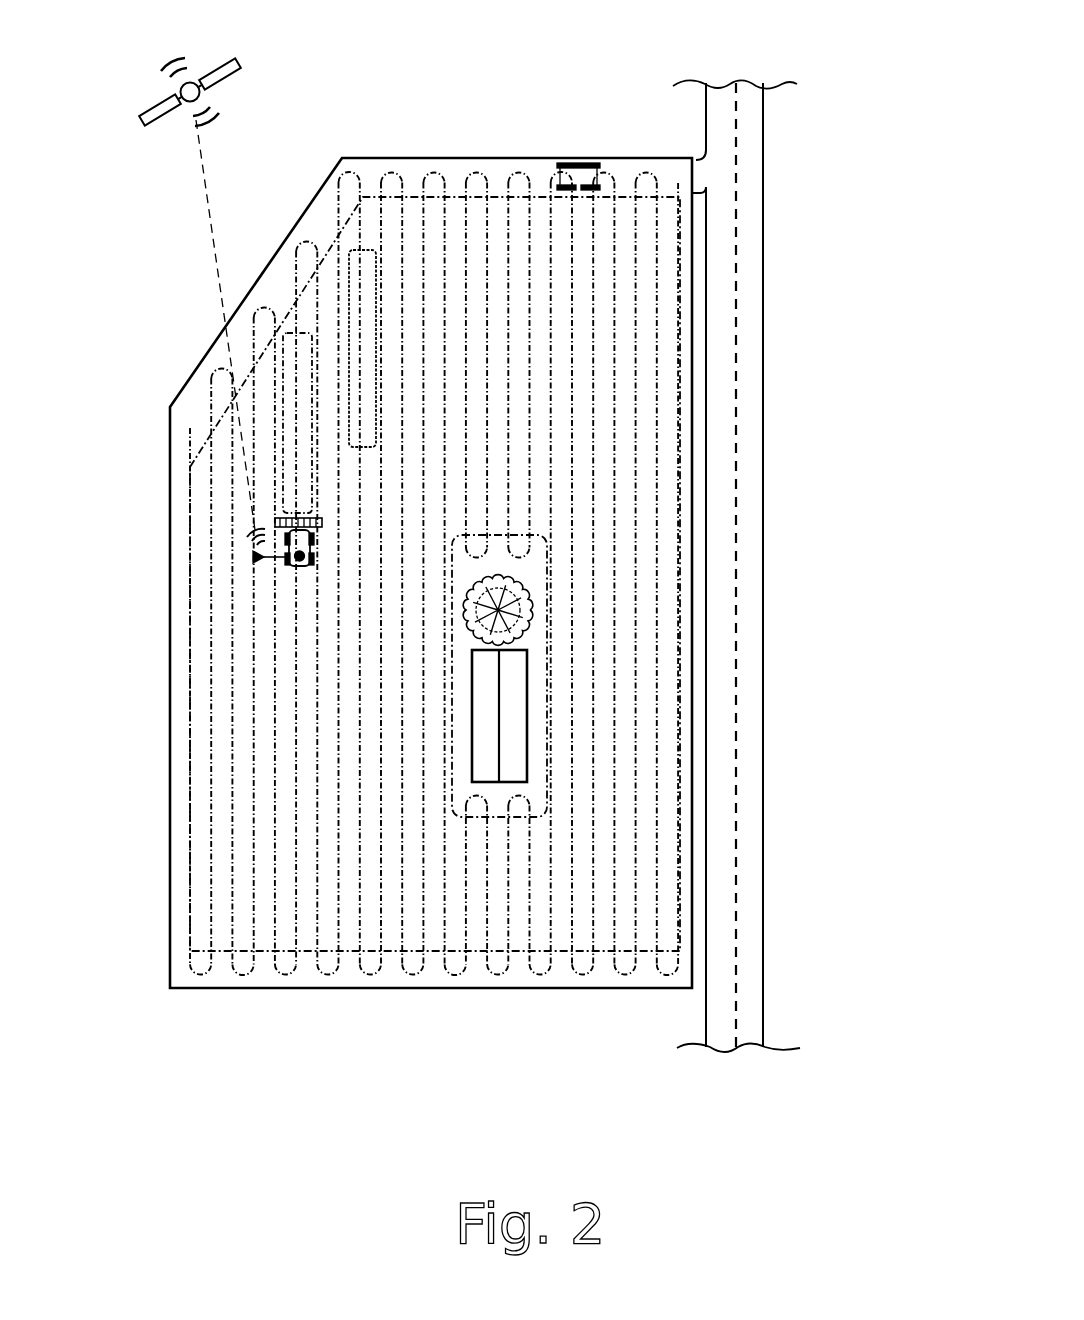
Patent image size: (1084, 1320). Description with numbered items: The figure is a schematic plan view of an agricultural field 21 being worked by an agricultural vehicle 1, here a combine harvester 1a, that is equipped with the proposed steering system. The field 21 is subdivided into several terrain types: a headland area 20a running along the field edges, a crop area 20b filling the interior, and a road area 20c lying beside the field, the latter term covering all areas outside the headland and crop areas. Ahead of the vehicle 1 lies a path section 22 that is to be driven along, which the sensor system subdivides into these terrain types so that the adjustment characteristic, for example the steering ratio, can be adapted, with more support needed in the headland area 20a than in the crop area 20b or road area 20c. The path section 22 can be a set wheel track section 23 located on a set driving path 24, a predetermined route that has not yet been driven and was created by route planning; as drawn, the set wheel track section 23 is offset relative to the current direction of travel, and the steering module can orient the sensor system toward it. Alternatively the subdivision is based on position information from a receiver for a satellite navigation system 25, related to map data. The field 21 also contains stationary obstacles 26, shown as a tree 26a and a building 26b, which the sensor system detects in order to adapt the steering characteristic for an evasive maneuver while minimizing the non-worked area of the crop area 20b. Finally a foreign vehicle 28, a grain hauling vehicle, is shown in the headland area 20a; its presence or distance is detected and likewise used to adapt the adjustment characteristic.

The agricultural vehicle 1 is at (217, 445).
The combine harvester 1a is at (268, 546).
The headland area 20a is at (500, 173).
The crop area 20b is at (670, 367).
The road area 20c is at (748, 213).
The agricultural field 21 is at (222, 1032).
The path section 22 is at (293, 340).
The set wheel track section 23 is at (368, 258).
The set driving path 24 is at (660, 682).
The satellite navigation system 25 is at (202, 93).
The obstacle 26 is at (543, 558).
The tree 26a is at (530, 622).
The building 26b is at (513, 748).
The foreign vehicle 28 is at (585, 160).